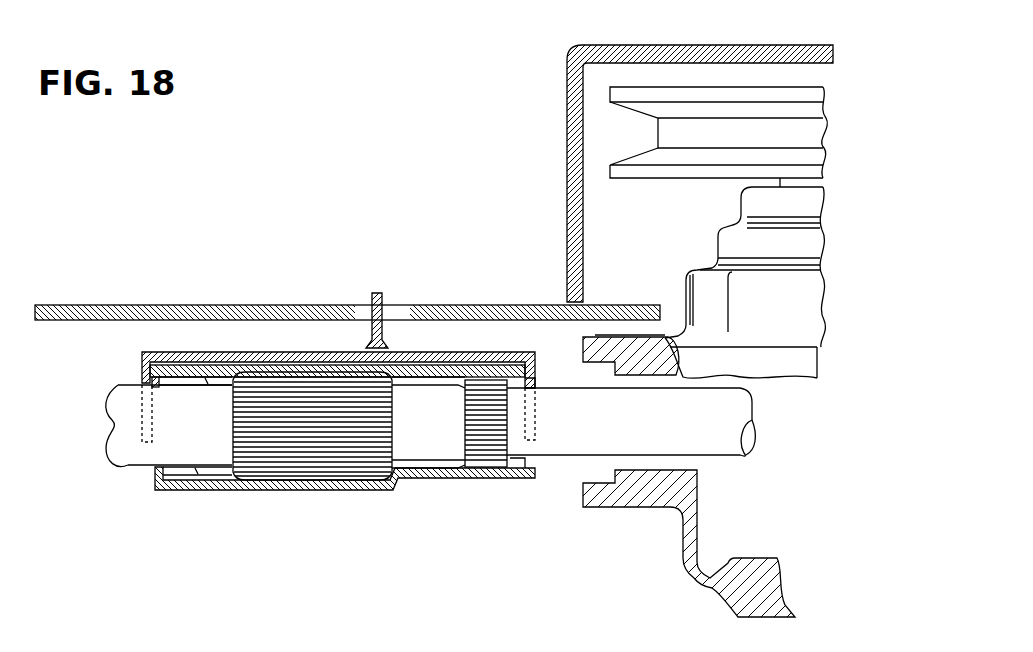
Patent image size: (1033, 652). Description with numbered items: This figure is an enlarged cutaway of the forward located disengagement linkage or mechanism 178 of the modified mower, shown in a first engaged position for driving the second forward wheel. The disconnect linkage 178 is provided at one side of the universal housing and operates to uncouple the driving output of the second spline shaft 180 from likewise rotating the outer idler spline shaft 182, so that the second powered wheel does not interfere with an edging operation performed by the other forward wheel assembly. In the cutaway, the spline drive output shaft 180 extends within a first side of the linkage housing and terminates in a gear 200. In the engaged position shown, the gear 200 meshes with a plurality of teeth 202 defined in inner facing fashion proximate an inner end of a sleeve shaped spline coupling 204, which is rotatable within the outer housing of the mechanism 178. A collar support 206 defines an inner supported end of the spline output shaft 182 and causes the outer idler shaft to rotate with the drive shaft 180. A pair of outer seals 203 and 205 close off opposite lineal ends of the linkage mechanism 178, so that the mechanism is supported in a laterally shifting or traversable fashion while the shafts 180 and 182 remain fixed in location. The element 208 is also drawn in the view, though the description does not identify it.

The disconnect linkage 178 is at (142, 353).
The second spline shaft 180 is at (570, 440).
The outer idler spline shaft 182 is at (152, 452).
The gear 200 is at (465, 402).
The teeth 202 is at (462, 462).
The outer seal 203 is at (152, 368).
The spline coupling 204 is at (424, 383).
The outer seal 205 is at (535, 385).
The collar support 206 is at (278, 452).
The pin 208 is at (373, 296).